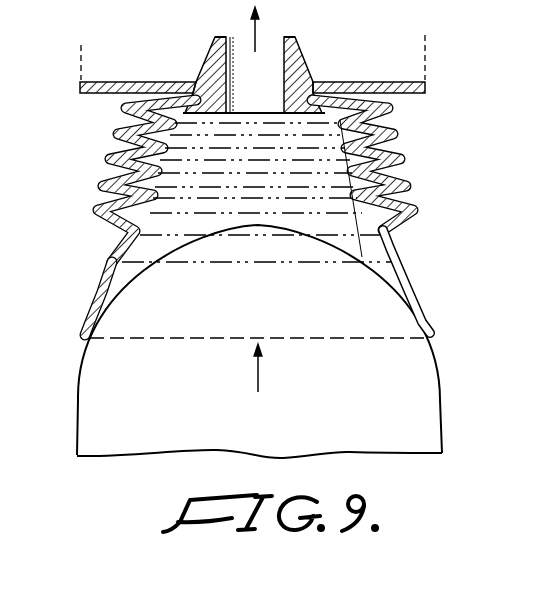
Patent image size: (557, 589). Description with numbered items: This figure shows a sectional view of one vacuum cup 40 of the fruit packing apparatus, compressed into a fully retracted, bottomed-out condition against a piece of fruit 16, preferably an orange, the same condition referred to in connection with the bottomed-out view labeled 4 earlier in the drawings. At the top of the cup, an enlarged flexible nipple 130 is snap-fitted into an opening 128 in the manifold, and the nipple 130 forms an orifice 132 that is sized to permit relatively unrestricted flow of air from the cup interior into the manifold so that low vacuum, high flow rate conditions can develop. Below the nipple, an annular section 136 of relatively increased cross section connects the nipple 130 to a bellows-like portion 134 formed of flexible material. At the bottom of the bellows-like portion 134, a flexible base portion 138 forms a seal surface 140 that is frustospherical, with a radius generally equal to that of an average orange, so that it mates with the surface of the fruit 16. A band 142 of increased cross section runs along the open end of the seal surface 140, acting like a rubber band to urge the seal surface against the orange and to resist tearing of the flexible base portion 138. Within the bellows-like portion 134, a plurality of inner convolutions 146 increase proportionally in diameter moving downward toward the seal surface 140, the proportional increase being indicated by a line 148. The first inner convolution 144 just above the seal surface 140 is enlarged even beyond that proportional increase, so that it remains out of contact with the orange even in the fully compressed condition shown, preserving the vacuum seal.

The container 4 is at (4, 174).
The fruit 16 is at (210, 432).
The vacuum cup 40 is at (104, 151).
The opening 128 is at (203, 72).
The flexible nipple 130 is at (301, 53).
The orifice 132 is at (240, 36).
The bellows-like portion 134 is at (405, 156).
The annular section 136 is at (343, 97).
The flexible base portion 138 is at (96, 298).
The seal surface 140 is at (115, 306).
The band 142 is at (82, 331).
The first inner convolution 144 is at (140, 228).
The inner convolutions 146 is at (150, 166).
The line 148 is at (357, 227).